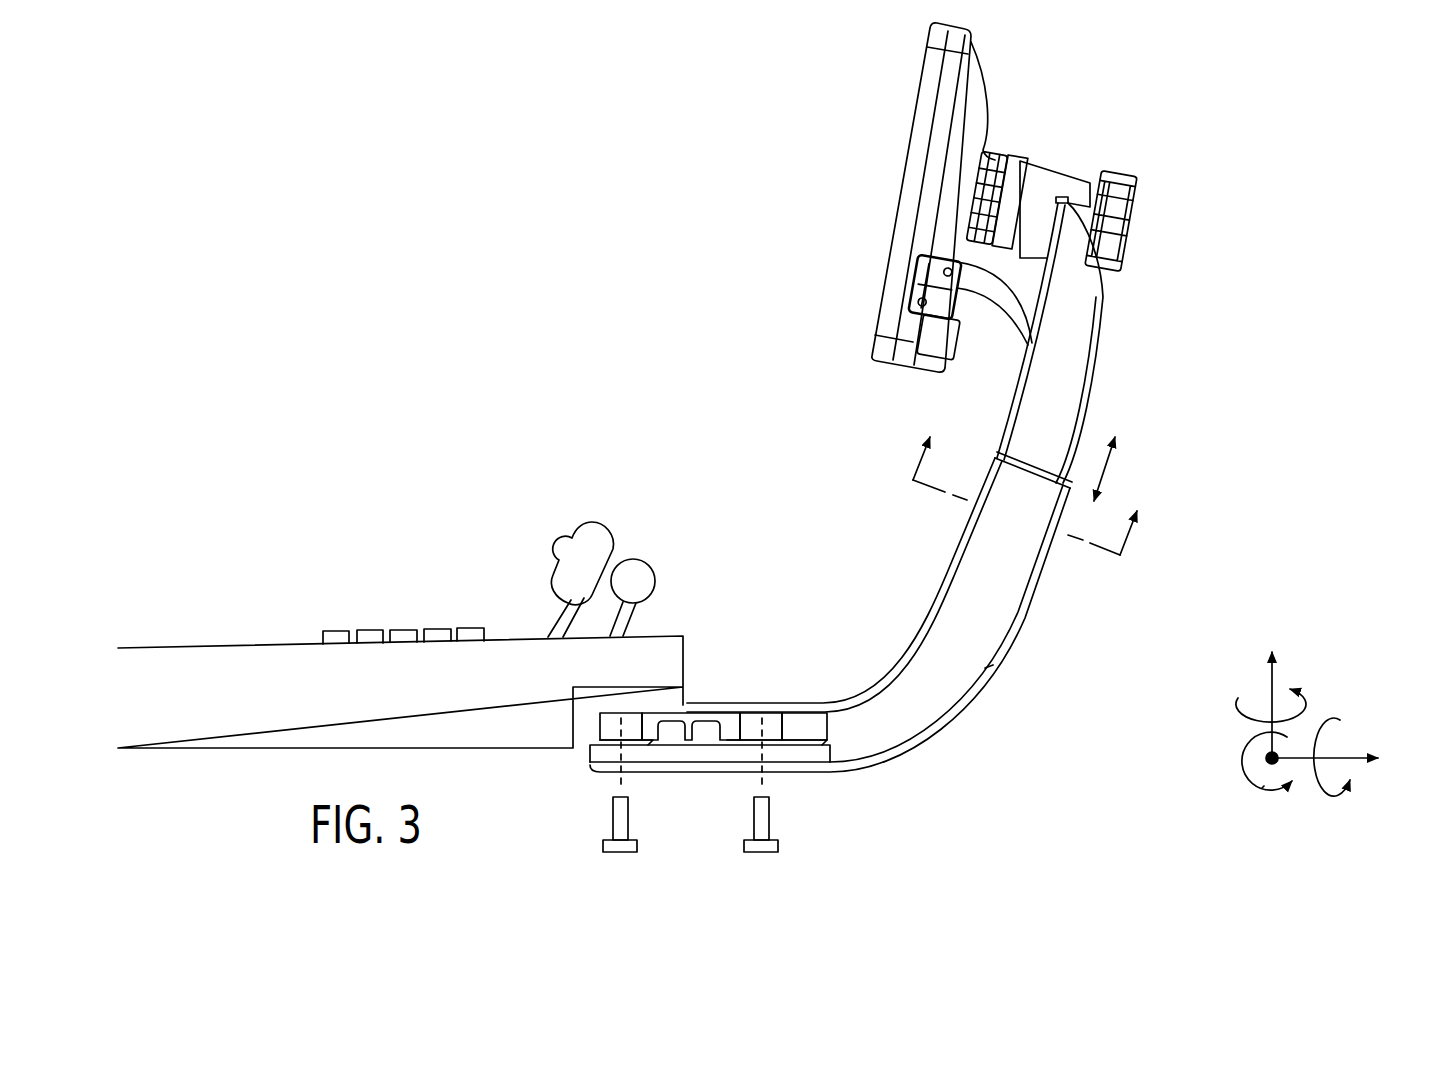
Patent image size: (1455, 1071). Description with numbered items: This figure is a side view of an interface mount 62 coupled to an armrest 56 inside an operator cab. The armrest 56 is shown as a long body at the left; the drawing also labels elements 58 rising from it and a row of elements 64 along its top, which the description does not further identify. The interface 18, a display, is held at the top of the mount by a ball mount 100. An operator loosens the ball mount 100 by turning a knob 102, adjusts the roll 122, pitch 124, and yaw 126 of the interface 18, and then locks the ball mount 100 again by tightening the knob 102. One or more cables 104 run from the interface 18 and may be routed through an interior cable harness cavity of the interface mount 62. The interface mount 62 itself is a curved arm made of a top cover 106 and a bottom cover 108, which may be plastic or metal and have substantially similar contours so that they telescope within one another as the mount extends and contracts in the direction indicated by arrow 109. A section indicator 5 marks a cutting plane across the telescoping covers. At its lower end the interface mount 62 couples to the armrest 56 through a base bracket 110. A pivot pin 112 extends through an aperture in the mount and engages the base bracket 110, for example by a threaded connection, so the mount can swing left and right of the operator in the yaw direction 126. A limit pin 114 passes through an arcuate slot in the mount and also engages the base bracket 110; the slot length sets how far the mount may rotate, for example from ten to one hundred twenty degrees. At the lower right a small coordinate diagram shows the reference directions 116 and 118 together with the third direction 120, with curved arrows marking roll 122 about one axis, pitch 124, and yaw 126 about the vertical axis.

The section line 5- 5 is at (1031, 482).
The interface 18 is at (900, 197).
The armrest 56 is at (290, 481).
The joysticks 58 is at (590, 520).
The interface mount 62 is at (1023, 743).
The buttons 64 is at (424, 604).
The ball mount 100 is at (1074, 157).
The knob 102 is at (1113, 218).
The cables 104 is at (1009, 287).
The top cover 106 is at (1080, 328).
The bottom cover 108 is at (992, 582).
The arrow 109 is at (1108, 468).
The base bracket 110 is at (688, 697).
The pivot pin 112 is at (769, 820).
The limit pin 114 is at (614, 822).
The direction 116 is at (1349, 757).
The direction 118 is at (1272, 680).
The third direction 120 is at (1263, 788).
The roll 122 is at (1336, 799).
The pitch 124 is at (1249, 768).
The yaw 126 is at (1239, 704).